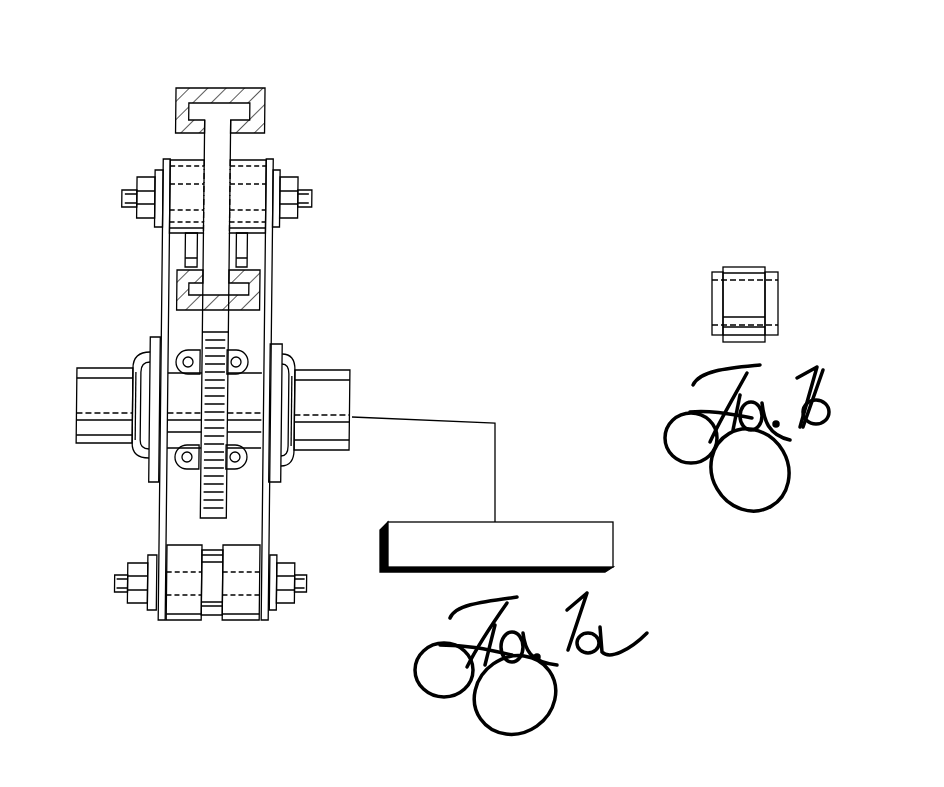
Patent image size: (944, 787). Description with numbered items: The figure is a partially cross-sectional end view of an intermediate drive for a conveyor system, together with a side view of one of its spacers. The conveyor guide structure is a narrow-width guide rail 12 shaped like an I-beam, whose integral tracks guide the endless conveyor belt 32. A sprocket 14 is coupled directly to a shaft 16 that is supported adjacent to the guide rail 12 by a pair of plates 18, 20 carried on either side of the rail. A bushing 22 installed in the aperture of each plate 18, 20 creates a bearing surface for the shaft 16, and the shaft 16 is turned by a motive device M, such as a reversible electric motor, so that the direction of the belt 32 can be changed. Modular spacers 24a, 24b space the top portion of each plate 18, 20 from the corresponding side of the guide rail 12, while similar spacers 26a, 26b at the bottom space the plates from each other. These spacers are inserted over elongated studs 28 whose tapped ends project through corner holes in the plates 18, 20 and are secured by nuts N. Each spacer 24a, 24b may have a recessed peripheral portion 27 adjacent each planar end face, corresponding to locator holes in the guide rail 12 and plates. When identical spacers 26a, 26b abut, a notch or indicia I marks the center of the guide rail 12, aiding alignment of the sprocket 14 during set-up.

In FIG. 1A, the guide rail 12 is at (284, 263).
In FIG. 1A, the sprocket 14 is at (223, 335).
In FIG. 1A, the shaft 16 is at (333, 398).
In FIG. 1A, the plate 18 is at (158, 518).
In FIG. 1A, the plate 20 is at (268, 535).
In FIG. 1A, the bushing 22 is at (138, 457).
In FIG. 1A, the spacer 24a is at (183, 165).
In FIG. 1B, the spacer 24a is at (811, 257).
In FIG. 1A, the spacer 24b is at (252, 170).
In FIG. 1B, the spacer 24b is at (811, 257).
In FIG. 1A, the spacer 26a is at (183, 620).
In FIG. 1B, the spacer 26a is at (811, 257).
In FIG. 1A, the spacer 26b is at (245, 620).
In FIG. 1B, the spacer 26b is at (743, 273).
In FIG. 1A, the recessed peripheral portion 27 is at (207, 617).
In FIG. 1B, the recessed peripheral portion 27 is at (714, 261).
In FIG. 1A, the stud 28 is at (313, 202).
In FIG. 1A, the belt 32 is at (265, 88).
In FIG. 1A, the nut N is at (297, 182).
In FIG. 1A, the indicia I is at (213, 615).
In FIG. 1A, the motive device M is at (532, 527).